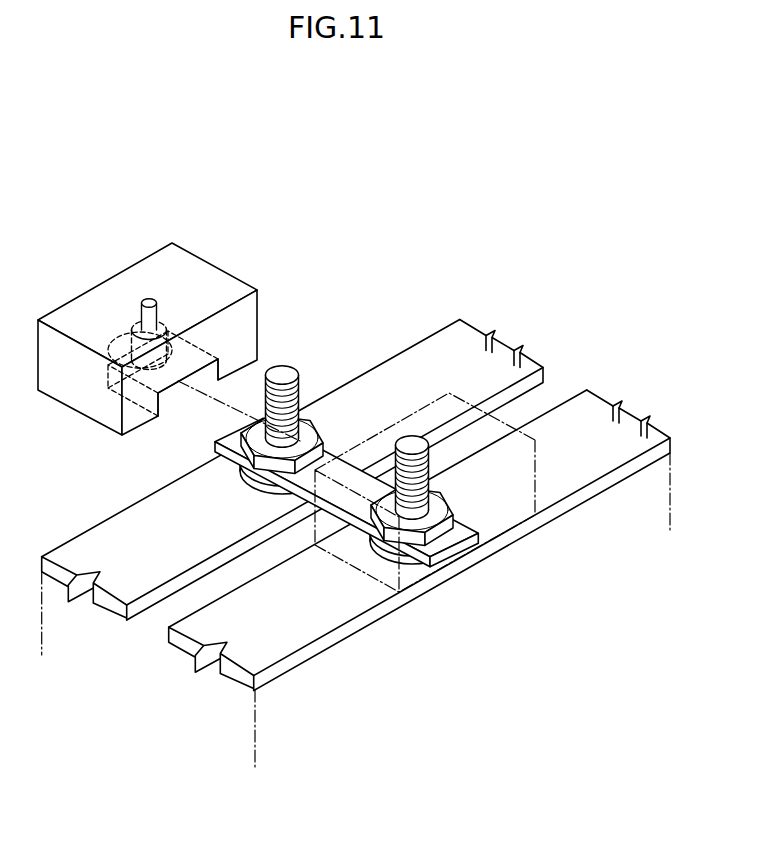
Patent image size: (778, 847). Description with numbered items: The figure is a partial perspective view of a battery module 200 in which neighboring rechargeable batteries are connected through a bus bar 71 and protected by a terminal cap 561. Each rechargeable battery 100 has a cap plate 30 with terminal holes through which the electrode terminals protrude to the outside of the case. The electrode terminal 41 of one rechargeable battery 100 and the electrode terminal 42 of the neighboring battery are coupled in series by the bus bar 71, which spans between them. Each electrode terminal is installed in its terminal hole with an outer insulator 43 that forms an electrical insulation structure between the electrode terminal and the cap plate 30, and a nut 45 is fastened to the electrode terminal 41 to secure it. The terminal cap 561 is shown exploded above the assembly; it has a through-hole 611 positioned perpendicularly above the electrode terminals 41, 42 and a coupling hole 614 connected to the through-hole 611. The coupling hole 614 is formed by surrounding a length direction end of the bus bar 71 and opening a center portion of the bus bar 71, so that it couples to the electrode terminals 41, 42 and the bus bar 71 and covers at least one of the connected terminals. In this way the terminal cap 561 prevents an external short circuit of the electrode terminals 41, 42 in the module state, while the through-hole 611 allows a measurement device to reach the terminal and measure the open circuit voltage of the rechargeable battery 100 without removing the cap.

The battery module 200 is at (364, 116).
The cap plate 30 is at (465, 358).
The electrode terminal 41 is at (282, 374).
The electrode terminal 42 is at (418, 444).
The outer insulator 43 is at (240, 480).
The nut 45 is at (310, 423).
The bus bar 71 is at (442, 545).
The terminal cap 561 is at (333, 397).
The through-hole 611 is at (148, 301).
The coupling hole 614 is at (187, 390).
The rechargeable battery 100 is at (241, 760).